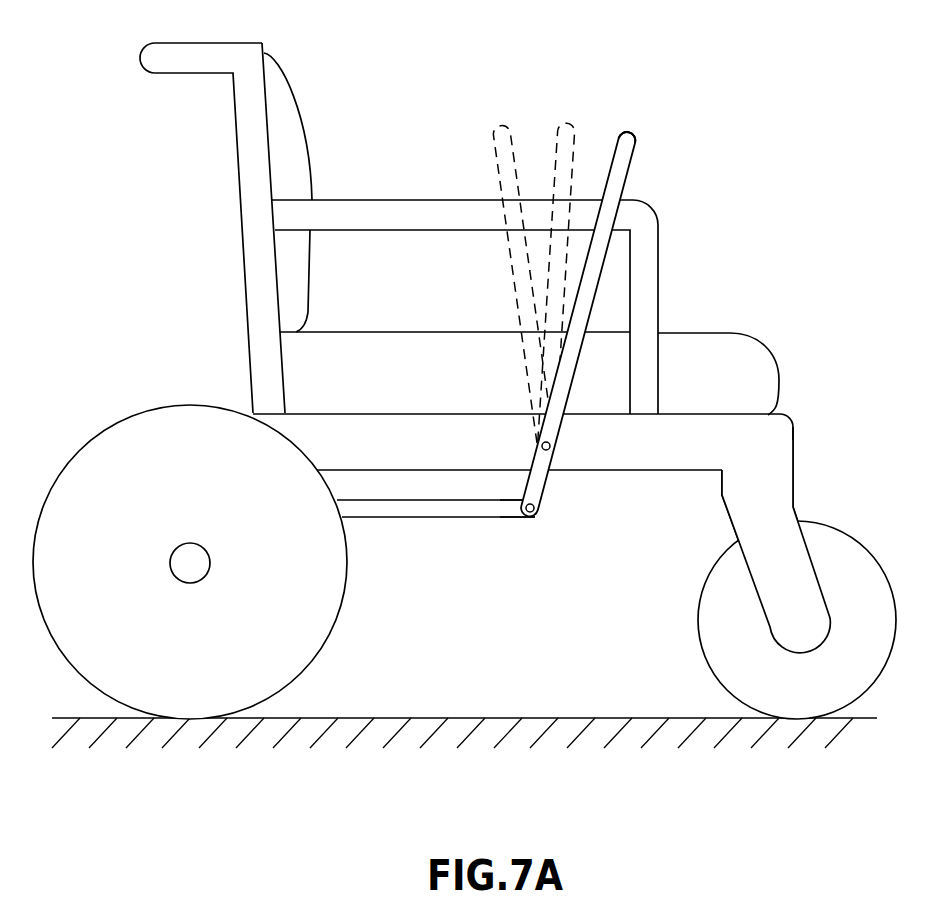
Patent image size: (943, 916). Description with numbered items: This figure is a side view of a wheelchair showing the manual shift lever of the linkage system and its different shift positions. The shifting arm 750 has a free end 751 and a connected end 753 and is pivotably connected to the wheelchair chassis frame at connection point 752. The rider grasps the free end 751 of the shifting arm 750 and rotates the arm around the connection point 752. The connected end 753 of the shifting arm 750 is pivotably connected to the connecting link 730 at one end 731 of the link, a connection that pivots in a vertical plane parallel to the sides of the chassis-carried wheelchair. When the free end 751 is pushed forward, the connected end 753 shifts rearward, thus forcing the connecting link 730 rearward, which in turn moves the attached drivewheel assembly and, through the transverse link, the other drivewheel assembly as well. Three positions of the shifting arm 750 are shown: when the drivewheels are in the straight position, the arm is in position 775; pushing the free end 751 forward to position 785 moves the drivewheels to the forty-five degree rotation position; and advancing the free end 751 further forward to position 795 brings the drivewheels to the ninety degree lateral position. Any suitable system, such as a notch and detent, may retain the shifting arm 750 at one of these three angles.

The connecting link 730 is at (408, 519).
The one end of connecting link 731 is at (503, 513).
The shifting arm 750 is at (617, 188).
The free end 751 is at (630, 151).
The connection point 752 is at (540, 446).
The connected end 753 is at (543, 500).
The straight position 775 is at (493, 121).
The rotation position 785 is at (554, 118).
The lateral position 795 is at (622, 133).